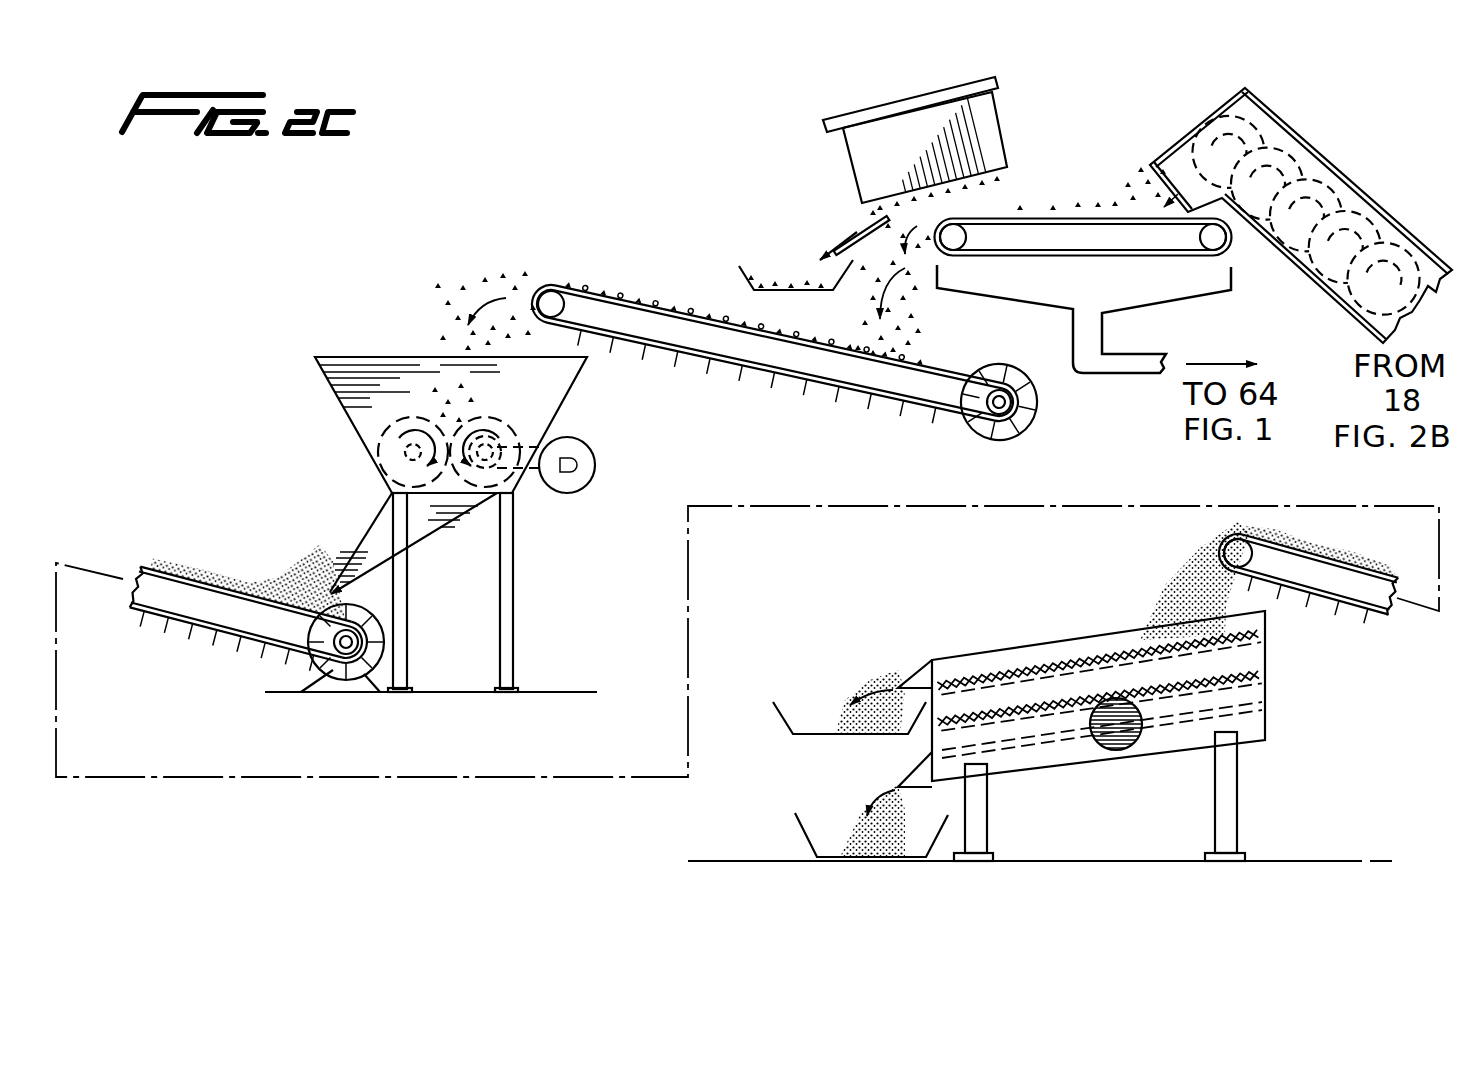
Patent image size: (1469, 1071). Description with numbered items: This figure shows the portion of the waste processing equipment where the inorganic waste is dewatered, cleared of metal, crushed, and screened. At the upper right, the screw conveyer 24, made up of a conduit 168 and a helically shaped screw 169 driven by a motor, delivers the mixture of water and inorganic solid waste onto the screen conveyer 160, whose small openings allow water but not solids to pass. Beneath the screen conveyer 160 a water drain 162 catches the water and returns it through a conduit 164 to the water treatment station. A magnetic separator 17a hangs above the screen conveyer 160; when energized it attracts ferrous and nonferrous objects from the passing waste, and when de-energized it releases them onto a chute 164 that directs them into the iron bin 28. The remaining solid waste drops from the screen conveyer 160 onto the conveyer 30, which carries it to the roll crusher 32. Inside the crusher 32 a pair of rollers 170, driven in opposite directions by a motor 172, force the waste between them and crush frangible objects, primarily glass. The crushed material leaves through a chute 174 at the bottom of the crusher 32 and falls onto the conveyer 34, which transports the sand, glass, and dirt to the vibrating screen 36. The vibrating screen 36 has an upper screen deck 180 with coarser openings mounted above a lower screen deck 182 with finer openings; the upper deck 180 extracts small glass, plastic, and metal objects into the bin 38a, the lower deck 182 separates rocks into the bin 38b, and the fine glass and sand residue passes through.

The magnetic separator 17a is at (1003, 122).
The chute 164 is at (850, 225).
The screen conveyer 160 is at (996, 216).
The conduit 168 is at (1267, 105).
The screw conveyer 24 is at (1288, 200).
The helically shaped screw 169 is at (1442, 257).
The water drain 162 is at (1225, 290).
The iron bin 28 is at (739, 265).
The conveyer 30 is at (811, 384).
The roll crusher 32 is at (303, 366).
The rollers 170 is at (530, 397).
The motor 172 is at (594, 457).
The chute 174 is at (429, 546).
The conveyer 34 is at (178, 622).
The vibrating screen 36 is at (1276, 705).
The upper screen deck 180 is at (995, 672).
The lower screen deck 182 is at (959, 728).
The bin 38a is at (786, 730).
The bin 38b is at (809, 841).